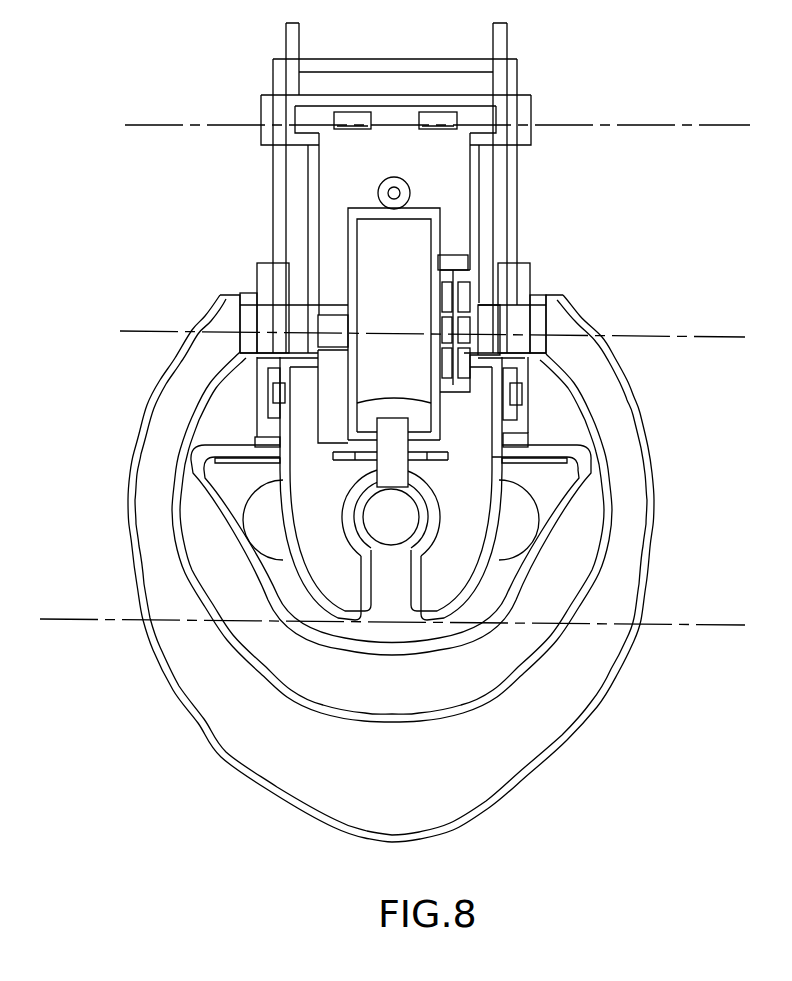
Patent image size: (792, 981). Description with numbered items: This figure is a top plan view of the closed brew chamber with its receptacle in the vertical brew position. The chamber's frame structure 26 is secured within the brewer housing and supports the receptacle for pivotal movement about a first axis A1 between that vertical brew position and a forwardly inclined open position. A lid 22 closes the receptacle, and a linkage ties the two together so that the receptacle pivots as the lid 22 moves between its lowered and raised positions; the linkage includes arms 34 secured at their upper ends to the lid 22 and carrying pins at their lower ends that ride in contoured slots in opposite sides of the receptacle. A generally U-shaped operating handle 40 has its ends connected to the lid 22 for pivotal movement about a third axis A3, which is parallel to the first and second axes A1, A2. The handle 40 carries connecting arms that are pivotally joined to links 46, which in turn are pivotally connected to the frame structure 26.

The lid 22 is at (468, 503).
The frame structure 26 is at (272, 208).
The arms 34 is at (265, 438).
The operating handle 40 is at (590, 716).
The links 46 is at (256, 284).
The first axis A1 is at (680, 624).
The second axis A2 is at (675, 127).
The third axis A3 is at (710, 338).